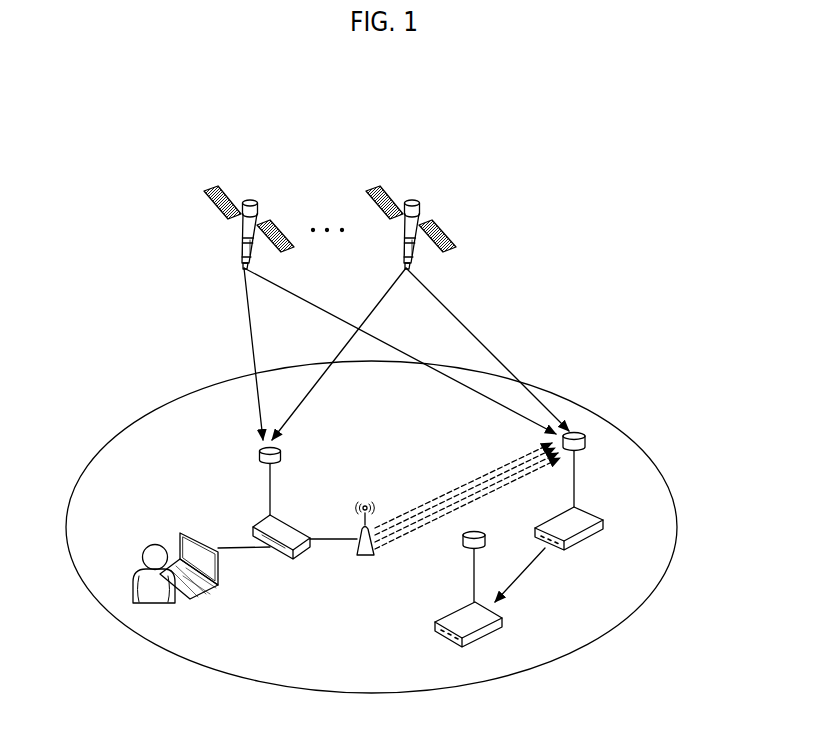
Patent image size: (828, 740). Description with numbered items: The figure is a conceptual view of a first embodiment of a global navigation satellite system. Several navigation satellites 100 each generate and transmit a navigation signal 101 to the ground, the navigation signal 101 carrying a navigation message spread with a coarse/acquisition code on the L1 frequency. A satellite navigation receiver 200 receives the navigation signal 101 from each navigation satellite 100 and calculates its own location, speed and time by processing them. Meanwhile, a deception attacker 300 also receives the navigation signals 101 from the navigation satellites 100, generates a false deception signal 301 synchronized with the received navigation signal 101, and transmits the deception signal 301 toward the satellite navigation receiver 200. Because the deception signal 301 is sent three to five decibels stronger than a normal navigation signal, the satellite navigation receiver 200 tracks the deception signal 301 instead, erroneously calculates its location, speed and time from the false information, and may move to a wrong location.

The navigation satellite 100 is at (253, 202).
The navigation signal 101 is at (248, 319).
The satellite navigation receiver 200 is at (604, 522).
The deception attacker 300 is at (253, 526).
The deception signal 301 is at (458, 485).